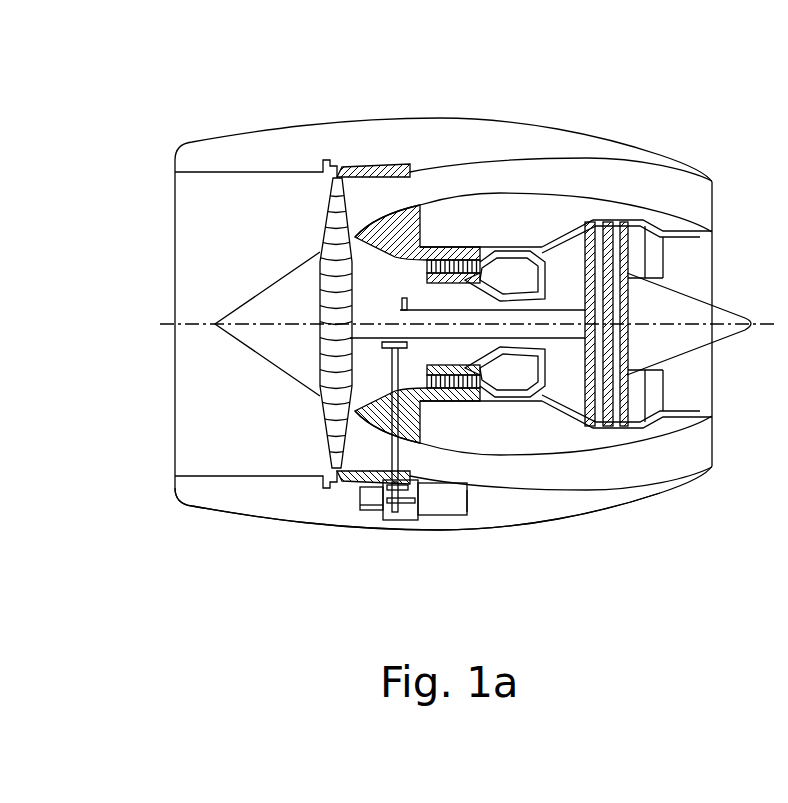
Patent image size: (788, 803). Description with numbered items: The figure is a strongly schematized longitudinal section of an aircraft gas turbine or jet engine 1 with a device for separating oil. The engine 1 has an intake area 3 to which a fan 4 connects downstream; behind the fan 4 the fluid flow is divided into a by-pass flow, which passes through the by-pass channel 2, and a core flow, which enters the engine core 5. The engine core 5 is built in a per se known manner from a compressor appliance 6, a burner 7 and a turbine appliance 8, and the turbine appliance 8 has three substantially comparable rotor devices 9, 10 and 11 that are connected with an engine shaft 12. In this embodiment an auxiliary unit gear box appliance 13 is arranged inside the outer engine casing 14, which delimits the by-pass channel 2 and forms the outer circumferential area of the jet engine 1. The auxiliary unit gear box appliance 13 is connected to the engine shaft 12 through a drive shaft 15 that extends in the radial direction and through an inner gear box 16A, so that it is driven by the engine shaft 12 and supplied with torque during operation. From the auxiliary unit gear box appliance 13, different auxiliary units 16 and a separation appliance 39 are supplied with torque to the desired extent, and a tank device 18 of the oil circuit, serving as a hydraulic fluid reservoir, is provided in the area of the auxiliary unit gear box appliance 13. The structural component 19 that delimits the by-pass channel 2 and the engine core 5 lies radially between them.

The jet engine 1 is at (231, 100).
The by-pass channel 2 is at (473, 180).
The intake area 3 is at (187, 200).
The fan 4 is at (322, 176).
The engine core 5 is at (317, 412).
The compressor appliance 6 is at (444, 240).
The burner 7 is at (520, 263).
The turbine appliance 8 is at (598, 212).
The rotor device 9 is at (596, 211).
The rotor device 10 is at (608, 223).
The rotor device 11 is at (626, 223).
The engine shaft 12 is at (552, 340).
The auxiliary unit gear box appliance 13 is at (413, 530).
The outer engine casing 14 is at (312, 528).
The drive shaft 15 is at (362, 487).
The auxiliary units 16 is at (460, 528).
The inner gear box 16A is at (364, 356).
The tank device 18 is at (372, 511).
The structural component 19 is at (335, 476).
The separation appliance 39 is at (470, 503).